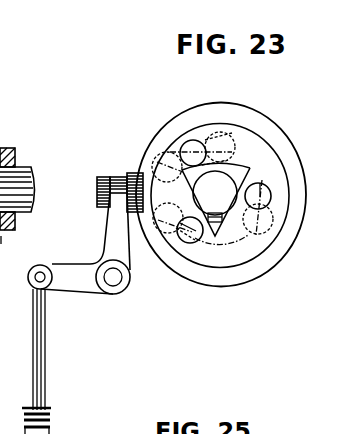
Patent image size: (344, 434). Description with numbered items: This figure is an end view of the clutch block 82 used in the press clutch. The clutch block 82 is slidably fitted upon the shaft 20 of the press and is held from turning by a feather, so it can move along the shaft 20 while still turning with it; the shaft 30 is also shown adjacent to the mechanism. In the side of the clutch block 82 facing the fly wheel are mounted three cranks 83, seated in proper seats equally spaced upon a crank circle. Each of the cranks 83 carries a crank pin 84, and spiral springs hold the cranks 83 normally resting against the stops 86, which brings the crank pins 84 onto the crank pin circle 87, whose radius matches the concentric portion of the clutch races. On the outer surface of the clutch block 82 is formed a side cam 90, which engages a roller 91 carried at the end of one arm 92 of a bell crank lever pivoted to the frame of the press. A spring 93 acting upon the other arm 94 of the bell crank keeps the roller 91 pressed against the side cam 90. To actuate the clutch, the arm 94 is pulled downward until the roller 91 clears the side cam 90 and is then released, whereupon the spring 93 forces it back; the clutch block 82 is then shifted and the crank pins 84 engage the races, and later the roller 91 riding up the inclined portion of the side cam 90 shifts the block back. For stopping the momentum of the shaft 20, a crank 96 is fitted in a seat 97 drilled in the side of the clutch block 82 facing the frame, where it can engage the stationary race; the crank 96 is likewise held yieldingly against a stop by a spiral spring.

The shaft 20 is at (215, 196).
The drive shaft 30 is at (17, 206).
The clutch block 82 is at (255, 142).
The cranks 83 is at (220, 140).
The crank pins 84 is at (265, 192).
The stops 86 is at (252, 167).
The crank pin circle 87 is at (252, 168).
The side cam 90 is at (158, 138).
The roller 91 is at (132, 172).
The arm 92 is at (110, 222).
The spring 93 is at (50, 432).
The arm 94 is at (70, 292).
The crank 96 is at (198, 155).
The seat 97 is at (163, 157).